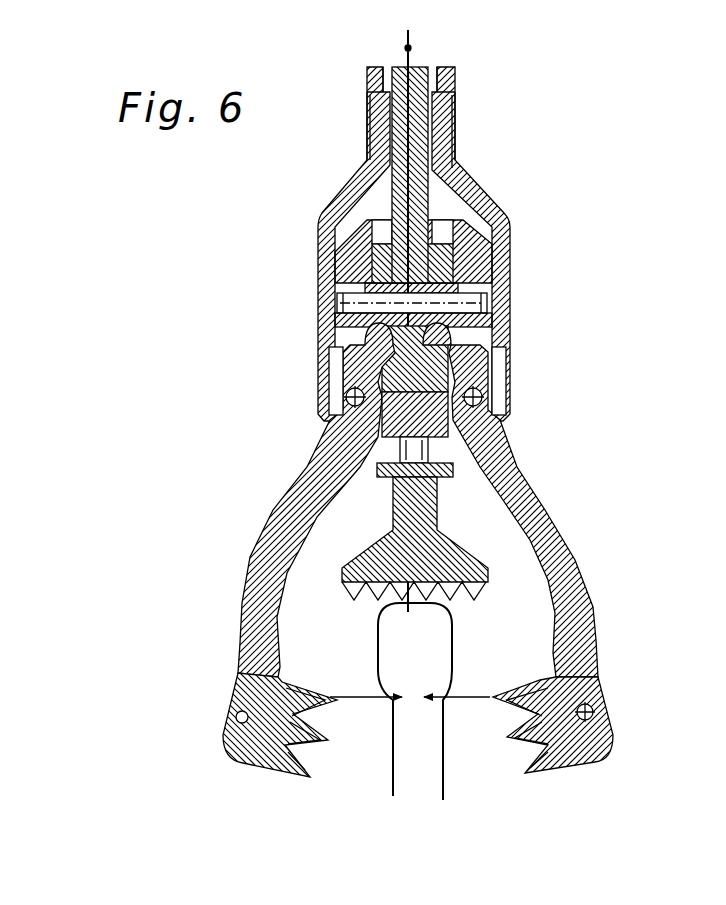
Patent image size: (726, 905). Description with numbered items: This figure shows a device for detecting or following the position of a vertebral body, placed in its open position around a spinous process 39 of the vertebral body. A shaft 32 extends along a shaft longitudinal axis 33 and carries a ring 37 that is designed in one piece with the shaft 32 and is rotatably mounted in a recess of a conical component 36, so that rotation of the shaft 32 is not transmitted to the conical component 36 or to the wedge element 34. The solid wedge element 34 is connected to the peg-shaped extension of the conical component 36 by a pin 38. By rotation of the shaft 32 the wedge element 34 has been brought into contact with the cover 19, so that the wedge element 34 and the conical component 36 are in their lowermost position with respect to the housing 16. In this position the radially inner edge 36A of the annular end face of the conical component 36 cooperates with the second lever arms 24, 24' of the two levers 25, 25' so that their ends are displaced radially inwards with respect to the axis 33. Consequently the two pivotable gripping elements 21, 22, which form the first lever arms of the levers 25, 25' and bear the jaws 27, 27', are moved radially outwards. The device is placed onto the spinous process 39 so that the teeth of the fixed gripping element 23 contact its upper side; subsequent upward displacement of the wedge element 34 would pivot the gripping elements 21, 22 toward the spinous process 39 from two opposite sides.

The housing 16 is at (327, 292).
The cover 19 is at (437, 415).
The pivotable gripping element 21 is at (258, 593).
The pivotable gripping element 22 is at (575, 582).
The fixed gripping element 23 is at (425, 520).
The second lever arm 24 is at (535, 381).
The second lever arm 24' is at (281, 381).
The lever 25 is at (642, 514).
The lever 25' is at (188, 517).
The jaw 27 is at (363, 420).
The jaw 27' is at (363, 420).
The shaft 32 is at (415, 137).
The shaft longitudinal axis 33 is at (410, 48).
The wedge element 34 is at (415, 352).
The conical component 36 is at (477, 262).
The radially inner edge 36A is at (350, 348).
The ring 37 is at (430, 263).
The pin 38 is at (470, 307).
The spinous process 39 is at (427, 757).